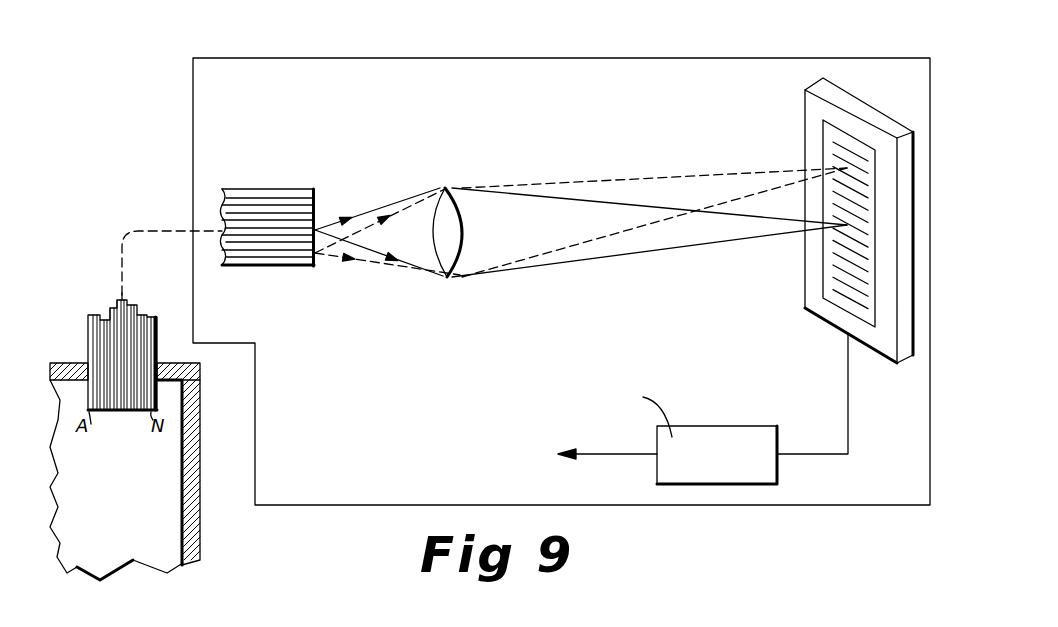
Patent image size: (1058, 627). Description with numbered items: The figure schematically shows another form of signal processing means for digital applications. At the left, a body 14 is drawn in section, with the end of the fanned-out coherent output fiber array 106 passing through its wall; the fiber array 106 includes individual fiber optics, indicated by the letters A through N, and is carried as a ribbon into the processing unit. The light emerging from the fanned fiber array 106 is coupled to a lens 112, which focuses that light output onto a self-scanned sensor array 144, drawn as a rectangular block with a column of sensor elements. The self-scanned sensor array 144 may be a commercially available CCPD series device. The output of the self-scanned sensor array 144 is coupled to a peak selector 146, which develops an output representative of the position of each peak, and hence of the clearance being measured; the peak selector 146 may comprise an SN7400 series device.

The vessel wall / sample body 14 is at (125, 530).
The fanned-out coherent output fiber array 106 is at (253, 265).
The lens 112 is at (447, 280).
The self-scanned sensor array 144 is at (805, 298).
The peak selector 146 is at (738, 467).